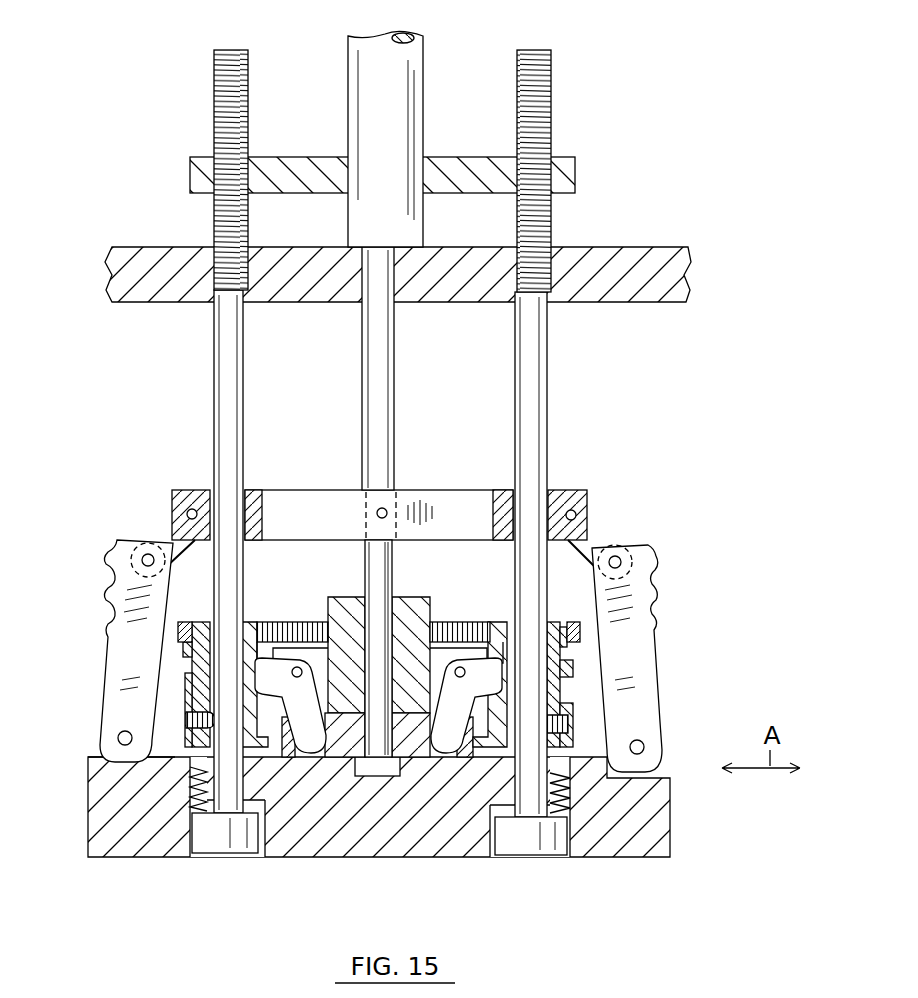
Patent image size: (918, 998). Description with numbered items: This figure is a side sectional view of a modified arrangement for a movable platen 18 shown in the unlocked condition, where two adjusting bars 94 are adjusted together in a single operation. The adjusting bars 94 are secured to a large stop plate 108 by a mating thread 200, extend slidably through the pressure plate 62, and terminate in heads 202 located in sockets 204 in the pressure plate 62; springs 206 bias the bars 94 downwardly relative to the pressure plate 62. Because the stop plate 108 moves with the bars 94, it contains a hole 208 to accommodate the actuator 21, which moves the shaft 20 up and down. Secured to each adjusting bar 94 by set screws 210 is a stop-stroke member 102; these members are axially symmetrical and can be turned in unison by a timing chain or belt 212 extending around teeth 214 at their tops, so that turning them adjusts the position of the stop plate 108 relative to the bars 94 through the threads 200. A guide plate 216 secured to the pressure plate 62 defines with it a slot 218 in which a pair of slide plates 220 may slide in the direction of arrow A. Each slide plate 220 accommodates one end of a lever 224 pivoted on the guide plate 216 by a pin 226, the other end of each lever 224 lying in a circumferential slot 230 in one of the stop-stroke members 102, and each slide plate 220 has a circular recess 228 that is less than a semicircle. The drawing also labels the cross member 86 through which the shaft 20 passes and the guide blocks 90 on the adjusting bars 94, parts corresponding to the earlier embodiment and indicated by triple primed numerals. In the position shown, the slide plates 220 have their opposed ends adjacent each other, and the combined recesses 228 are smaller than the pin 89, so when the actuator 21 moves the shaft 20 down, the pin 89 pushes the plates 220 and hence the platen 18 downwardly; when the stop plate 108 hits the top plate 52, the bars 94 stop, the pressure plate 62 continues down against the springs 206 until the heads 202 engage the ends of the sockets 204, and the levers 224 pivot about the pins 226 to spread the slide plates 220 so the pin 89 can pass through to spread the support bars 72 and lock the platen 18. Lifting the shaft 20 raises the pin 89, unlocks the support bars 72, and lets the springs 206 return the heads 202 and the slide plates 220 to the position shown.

The movable platen 18 is at (88, 826).
The shaft 20 is at (395, 421).
The actuator 21 is at (412, 118).
The top plate 52 is at (642, 257).
The pressure plate 62 is at (88, 776).
The support bars 72 is at (128, 646).
The cross head plate 86 is at (295, 490).
The pin 89 is at (386, 563).
The guide block 90 is at (172, 520).
The adjusting bars 94 is at (215, 372).
The stop-stroke member 102 is at (248, 622).
The stop plate 108 is at (574, 175).
The mating thread 200 is at (215, 157).
The heads 202 is at (237, 852).
The sockets 204 is at (190, 857).
The springs 206 is at (190, 792).
The hole 208 is at (345, 163).
The set screws 210 is at (188, 720).
The timing chain or belt 212 is at (442, 622).
The teeth 214 is at (568, 627).
The guide plate 216 is at (315, 695).
The slot 218 is at (281, 755).
The slide plates 220 is at (340, 747).
The lever 224 is at (672, 690).
The pin 226 is at (296, 666).
The circular recess 228 is at (379, 777).
The circumferential slot 230 is at (195, 680).